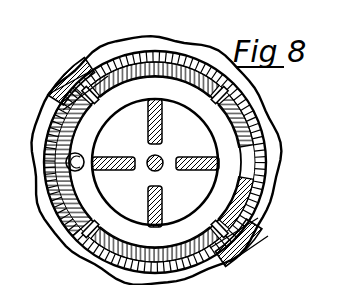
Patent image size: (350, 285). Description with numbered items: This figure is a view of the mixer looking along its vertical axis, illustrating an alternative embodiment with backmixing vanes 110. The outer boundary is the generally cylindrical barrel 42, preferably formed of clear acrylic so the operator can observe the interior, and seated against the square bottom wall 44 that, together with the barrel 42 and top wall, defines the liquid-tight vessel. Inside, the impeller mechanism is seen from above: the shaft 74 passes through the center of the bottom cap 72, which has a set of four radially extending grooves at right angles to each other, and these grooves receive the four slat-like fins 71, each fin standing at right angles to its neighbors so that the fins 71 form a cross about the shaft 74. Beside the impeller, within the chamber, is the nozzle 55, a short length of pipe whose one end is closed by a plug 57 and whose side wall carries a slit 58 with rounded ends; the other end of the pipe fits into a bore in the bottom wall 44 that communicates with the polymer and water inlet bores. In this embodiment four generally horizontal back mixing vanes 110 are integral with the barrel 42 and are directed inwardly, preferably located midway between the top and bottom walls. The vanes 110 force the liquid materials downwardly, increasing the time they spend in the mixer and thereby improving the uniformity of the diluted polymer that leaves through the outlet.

The barrel 42 is at (275, 130).
The bottom wall 44 is at (257, 112).
The nozzle 55 is at (50, 113).
The plug 57 is at (66, 160).
The slit 58 is at (60, 184).
The fins 71 is at (147, 124).
The bottom cap 72 is at (135, 201).
The shaft 74 is at (160, 156).
The back mixing vanes 110 is at (74, 78).